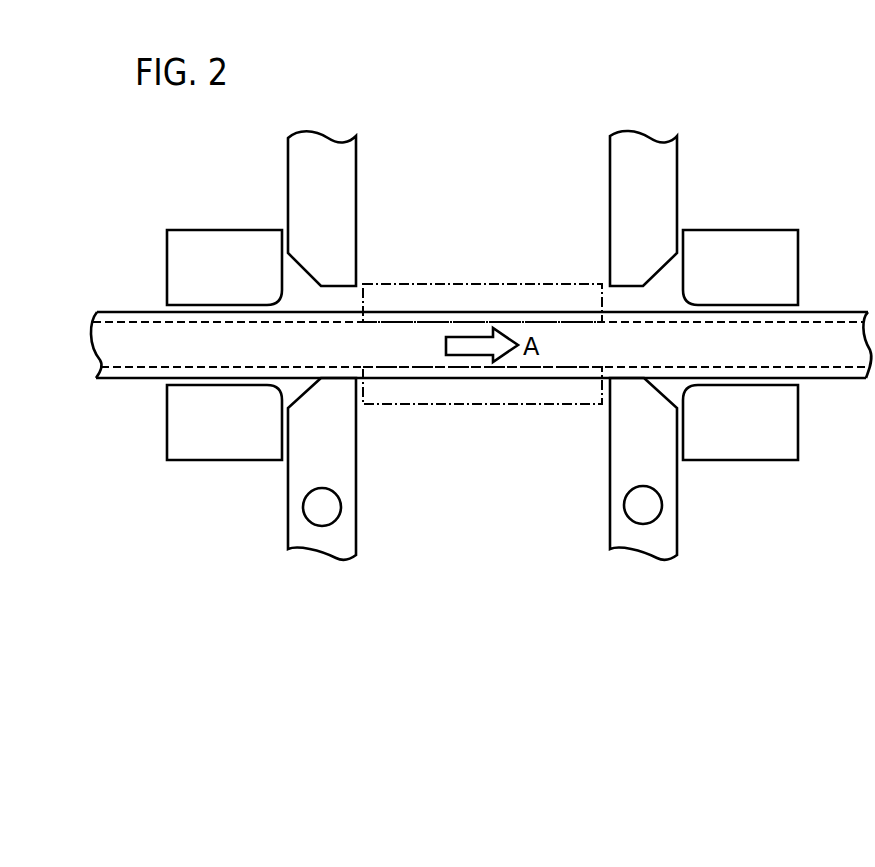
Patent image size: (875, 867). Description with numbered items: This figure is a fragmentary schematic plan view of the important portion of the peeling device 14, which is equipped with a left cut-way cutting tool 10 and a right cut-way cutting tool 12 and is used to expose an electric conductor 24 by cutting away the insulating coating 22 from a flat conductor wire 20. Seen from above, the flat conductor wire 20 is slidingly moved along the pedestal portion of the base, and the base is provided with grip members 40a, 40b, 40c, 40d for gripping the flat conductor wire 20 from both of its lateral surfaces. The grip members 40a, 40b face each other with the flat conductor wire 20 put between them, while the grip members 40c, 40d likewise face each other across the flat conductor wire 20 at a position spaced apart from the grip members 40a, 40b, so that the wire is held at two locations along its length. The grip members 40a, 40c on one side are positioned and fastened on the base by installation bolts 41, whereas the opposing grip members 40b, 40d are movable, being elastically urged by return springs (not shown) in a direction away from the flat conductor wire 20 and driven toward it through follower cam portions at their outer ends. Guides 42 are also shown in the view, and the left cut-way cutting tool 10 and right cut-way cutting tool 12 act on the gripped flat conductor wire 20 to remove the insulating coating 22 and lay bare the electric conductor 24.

The left cut-way cutting tool 10 is at (537, 408).
The right cut-way cutting tool 12 is at (538, 282).
The peeling device 14 is at (782, 115).
The flat conductor wire 20 is at (453, 345).
The insulating coating 22 is at (120, 350).
The electric conductor 24 is at (115, 374).
The grip member 40a is at (667, 520).
The grip member 40b is at (667, 165).
The grip member 40c is at (345, 525).
The grip member 40d is at (345, 165).
The installation bolts 41 is at (315, 505).
The guides 42 is at (172, 252).